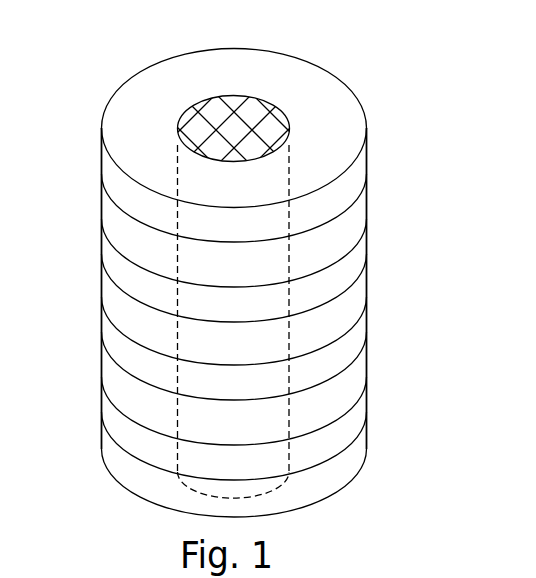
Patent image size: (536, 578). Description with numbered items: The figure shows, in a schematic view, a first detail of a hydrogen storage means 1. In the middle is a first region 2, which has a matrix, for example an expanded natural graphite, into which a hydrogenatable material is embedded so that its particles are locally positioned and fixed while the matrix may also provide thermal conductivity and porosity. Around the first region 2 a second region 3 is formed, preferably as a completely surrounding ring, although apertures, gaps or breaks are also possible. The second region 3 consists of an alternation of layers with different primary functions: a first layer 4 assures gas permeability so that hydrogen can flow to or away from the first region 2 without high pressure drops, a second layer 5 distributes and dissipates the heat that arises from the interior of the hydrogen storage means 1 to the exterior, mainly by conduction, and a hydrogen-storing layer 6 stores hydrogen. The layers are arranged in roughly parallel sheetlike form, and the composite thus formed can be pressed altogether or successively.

The hydrogen storage means 1 is at (438, 171).
The first region 2 is at (277, 117).
The second region 3 is at (130, 98).
The first layer 4 is at (357, 247).
The second layer 5 is at (357, 287).
The hydrogen-storing layer 6 is at (102, 322).